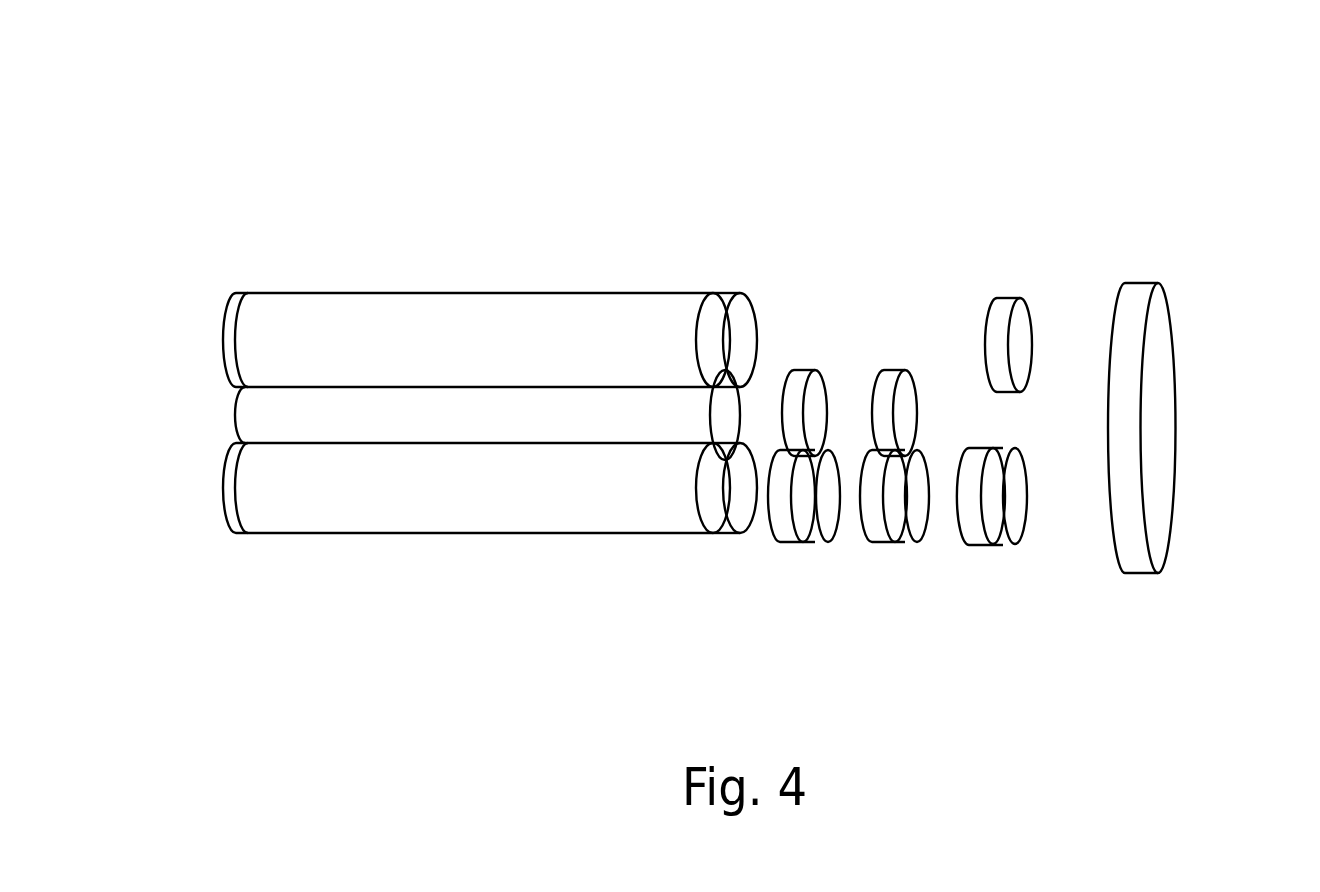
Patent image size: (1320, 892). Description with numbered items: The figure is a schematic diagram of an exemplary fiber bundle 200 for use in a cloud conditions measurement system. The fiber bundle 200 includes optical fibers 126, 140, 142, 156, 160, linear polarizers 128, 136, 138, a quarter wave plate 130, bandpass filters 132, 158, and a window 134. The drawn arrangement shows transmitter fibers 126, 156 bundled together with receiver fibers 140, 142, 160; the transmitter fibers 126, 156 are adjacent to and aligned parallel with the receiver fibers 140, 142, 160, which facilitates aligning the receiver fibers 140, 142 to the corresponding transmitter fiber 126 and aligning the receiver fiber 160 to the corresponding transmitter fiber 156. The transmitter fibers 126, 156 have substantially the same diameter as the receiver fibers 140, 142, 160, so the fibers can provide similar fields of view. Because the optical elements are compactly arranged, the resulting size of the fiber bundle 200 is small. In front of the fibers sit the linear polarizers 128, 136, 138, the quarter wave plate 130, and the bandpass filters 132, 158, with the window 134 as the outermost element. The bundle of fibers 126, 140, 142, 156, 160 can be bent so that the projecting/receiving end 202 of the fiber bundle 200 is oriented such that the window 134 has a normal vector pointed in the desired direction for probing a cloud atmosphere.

The fiber bundle 200 is at (492, 178).
The projecting/receiving end 202 is at (1147, 141).
The transmitter fiber 126 is at (277, 411).
The linear polarizer 128 is at (817, 392).
The quarter wave plate 130 is at (893, 370).
The bandpass filter 132 is at (998, 545).
The window 134 is at (1154, 431).
The linear polarizer 136 is at (805, 556).
The linear polarizer 138 is at (832, 548).
The receiver fiber 140 is at (308, 518).
The receiver fiber 142 is at (742, 487).
The transmitter fiber 156 is at (331, 333).
The bandpass filter 158 is at (1020, 318).
The receiver fiber 160 is at (740, 332).